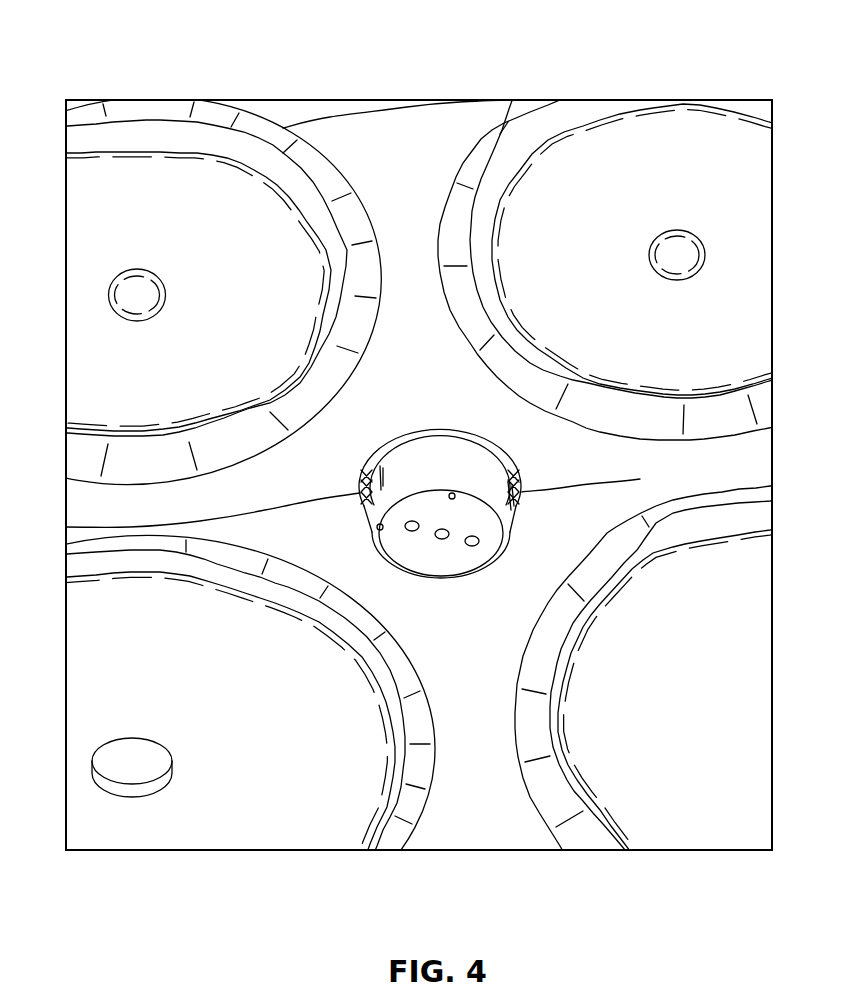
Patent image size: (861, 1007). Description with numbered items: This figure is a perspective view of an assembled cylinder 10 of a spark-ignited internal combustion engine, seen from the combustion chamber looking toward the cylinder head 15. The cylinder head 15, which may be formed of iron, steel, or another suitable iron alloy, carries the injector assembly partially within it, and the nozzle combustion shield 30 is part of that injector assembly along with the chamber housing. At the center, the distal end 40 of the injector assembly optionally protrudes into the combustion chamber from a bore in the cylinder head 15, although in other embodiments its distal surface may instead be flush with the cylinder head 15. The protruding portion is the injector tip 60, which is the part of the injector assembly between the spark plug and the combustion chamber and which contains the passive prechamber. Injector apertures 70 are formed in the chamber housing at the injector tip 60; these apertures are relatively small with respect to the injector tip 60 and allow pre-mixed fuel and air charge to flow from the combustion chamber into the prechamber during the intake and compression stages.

The cylinder 10 is at (88, 67).
The cylinder head 15 is at (405, 248).
The nozzle combustion shield 30 is at (66, 527).
The distal end 40 is at (594, 675).
The injector tip 60 is at (458, 467).
The injector apertures 70 is at (456, 491).